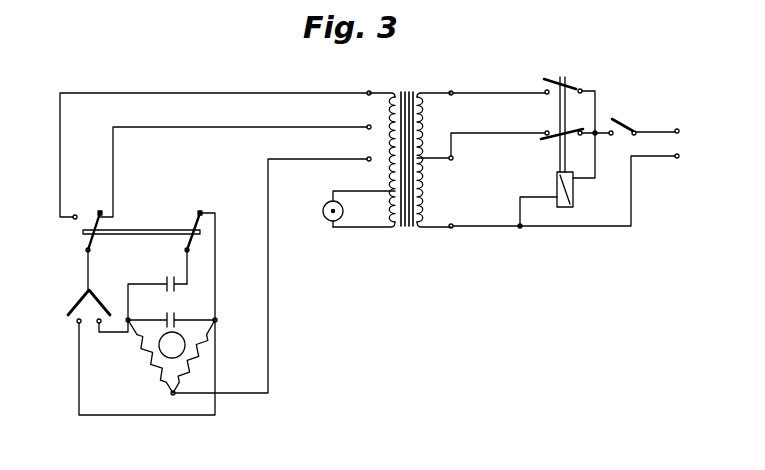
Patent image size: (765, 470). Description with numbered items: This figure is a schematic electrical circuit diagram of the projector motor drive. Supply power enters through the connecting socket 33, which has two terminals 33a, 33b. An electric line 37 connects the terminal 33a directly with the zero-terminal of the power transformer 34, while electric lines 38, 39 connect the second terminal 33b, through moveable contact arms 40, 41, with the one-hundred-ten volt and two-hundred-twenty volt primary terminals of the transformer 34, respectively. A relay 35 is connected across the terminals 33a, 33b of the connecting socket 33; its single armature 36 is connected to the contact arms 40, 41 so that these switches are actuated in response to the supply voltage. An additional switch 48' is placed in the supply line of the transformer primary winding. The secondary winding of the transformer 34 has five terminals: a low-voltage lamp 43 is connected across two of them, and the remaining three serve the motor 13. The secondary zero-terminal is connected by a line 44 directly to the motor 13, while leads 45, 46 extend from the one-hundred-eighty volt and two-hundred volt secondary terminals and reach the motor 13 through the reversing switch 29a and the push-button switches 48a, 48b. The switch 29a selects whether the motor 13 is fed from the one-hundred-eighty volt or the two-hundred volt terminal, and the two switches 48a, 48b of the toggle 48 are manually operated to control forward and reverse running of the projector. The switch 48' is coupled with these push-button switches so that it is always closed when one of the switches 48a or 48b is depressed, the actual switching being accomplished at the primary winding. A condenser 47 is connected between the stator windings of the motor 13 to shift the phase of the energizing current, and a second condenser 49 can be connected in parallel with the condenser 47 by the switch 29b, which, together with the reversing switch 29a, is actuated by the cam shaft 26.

The motor 13 is at (150, 352).
The cam shaft 26 is at (128, 230).
The reversing switch 29a is at (85, 245).
The switch 29b is at (197, 215).
The connecting socket 33 is at (688, 146).
The terminal of the connecting socket 33a is at (677, 160).
The second terminal of the connecting socket 33b is at (676, 128).
The power transformer 34 is at (411, 228).
The relay 35 is at (574, 197).
The armature 36 is at (560, 110).
The electric line 37 is at (487, 228).
The electric line 38 is at (486, 133).
The electric line 39 is at (500, 92).
The moveable contact arm 40 is at (548, 140).
The moveable contact arm 41 is at (549, 78).
The low-voltage lamp 43 is at (322, 211).
The line 44 is at (269, 318).
The lead 45 is at (212, 128).
The lead 46 is at (207, 93).
The condenser 47 is at (167, 313).
The push-button switch 48 is at (90, 325).
The push-button switch 48a is at (78, 304).
The push-button switch 48b is at (103, 300).
The additional switch 48' is at (638, 97).
The second condenser 49 is at (168, 278).